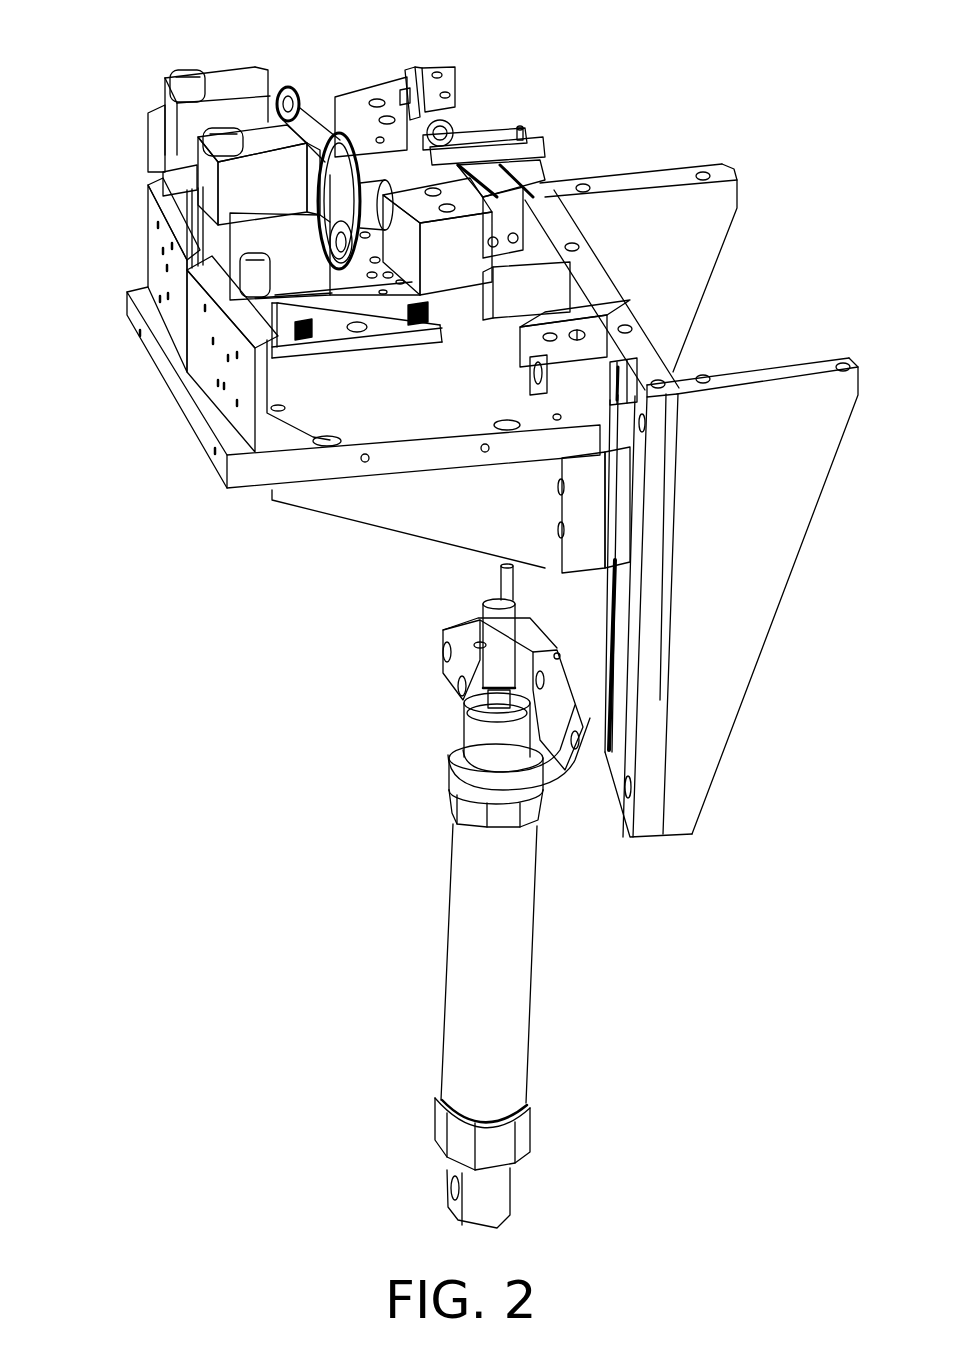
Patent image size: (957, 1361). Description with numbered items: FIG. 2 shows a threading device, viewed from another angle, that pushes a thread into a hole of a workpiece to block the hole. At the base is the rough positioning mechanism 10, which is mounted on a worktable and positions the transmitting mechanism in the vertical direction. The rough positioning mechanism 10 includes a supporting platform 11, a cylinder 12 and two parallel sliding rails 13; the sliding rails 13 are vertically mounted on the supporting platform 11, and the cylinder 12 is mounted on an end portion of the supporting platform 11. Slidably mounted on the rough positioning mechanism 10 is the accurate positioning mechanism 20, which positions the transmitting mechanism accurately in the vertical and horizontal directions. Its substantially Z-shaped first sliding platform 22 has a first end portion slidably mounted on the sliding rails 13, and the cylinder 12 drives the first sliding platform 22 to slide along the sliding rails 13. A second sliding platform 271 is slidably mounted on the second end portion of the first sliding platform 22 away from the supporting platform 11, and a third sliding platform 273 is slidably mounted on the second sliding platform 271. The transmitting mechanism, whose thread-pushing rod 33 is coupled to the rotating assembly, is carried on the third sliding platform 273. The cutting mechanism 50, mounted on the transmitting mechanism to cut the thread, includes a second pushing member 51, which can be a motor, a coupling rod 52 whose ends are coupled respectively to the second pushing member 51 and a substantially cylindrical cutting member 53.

The rough positioning mechanism 10 is at (681, 532).
The supporting platform 11 is at (688, 782).
The cylinder 12 is at (505, 880).
The sliding rails 13 is at (600, 720).
The accurate positioning mechanism 20 is at (124, 242).
The first sliding platform 22 is at (400, 457).
The thread-pushing rod 33 is at (342, 147).
The cutting mechanism 50 is at (566, 227).
The second pushing member 51 is at (470, 110).
The coupling rod 52 is at (485, 133).
The cutting member 53 is at (517, 137).
The second sliding platform 271 is at (320, 363).
The third sliding platform 273 is at (270, 330).